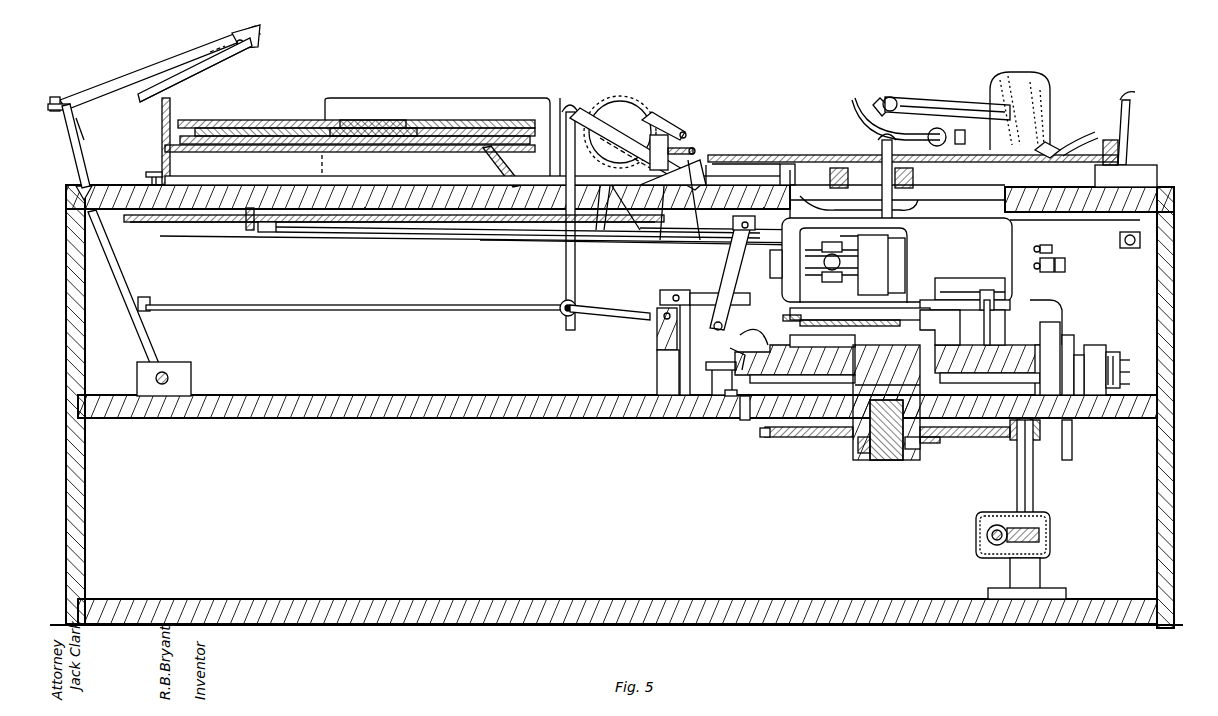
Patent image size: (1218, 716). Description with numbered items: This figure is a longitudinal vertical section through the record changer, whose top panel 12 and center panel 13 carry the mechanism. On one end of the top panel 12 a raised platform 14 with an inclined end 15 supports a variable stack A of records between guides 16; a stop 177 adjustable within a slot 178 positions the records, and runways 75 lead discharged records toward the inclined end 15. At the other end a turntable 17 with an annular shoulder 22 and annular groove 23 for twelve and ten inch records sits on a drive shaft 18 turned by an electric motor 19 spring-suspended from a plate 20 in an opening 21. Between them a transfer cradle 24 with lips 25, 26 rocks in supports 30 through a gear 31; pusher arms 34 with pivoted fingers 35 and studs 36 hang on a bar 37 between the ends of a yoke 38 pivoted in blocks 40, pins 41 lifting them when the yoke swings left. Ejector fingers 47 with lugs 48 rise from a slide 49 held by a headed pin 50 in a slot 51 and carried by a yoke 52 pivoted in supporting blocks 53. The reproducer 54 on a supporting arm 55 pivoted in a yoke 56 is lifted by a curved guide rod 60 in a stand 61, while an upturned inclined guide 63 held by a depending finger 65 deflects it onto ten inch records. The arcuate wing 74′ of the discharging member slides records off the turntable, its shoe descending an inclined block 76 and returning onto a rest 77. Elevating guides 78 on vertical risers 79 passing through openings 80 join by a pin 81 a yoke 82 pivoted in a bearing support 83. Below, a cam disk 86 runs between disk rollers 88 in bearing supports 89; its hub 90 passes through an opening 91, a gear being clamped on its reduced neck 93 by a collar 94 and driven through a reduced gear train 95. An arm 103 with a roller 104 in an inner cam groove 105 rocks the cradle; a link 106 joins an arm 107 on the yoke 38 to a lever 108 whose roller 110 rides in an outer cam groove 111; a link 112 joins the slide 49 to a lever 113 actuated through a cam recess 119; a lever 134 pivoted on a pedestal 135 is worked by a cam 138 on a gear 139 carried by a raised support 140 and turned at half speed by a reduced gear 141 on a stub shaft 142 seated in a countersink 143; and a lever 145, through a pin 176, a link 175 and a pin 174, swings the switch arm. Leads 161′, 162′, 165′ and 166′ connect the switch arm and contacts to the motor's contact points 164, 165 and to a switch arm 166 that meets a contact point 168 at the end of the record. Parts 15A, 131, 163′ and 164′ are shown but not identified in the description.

The top panel 12 is at (312, 222).
The center panel 13 is at (410, 412).
The raised platform 14 is at (368, 150).
The inclined end 15 is at (486, 170).
The bracket 15A is at (1140, 232).
The guides 16 is at (522, 110).
The turntable 17 is at (780, 150).
The drive shaft 18 is at (870, 150).
The electric motor 19 is at (996, 300).
The plate 20 is at (792, 188).
The opening 21 is at (768, 232).
The annular shoulder 22 is at (718, 158).
The annular groove 23 is at (740, 160).
The transfer cradle 24 is at (648, 118).
The lip 25 is at (672, 128).
The lip 26 is at (690, 158).
The supports 30 is at (606, 232).
The gear 31 is at (622, 96).
The pusher arms 34 is at (120, 82).
The pivoted fingers 35 is at (143, 99).
The record engaging studs 36 is at (160, 94).
The bar 37 is at (66, 98).
The yoke 38 is at (128, 265).
The blocks 40 is at (180, 370).
The pins 41 is at (84, 118).
The fingers 47 is at (700, 240).
The lugs 48 is at (642, 186).
The slide 49 is at (392, 230).
The headed pin 50 is at (250, 230).
The slot 51 is at (180, 222).
The yoke 52 is at (650, 230).
The supporting blocks 53 is at (732, 280).
The reproducer 54 is at (1028, 72).
The supporting arm 55 is at (944, 98).
The yoke 56 is at (876, 102).
The curved guide rod 60 is at (856, 96).
The stand 61 is at (950, 124).
The upturned inclined guide 63 is at (1075, 132).
The depending finger 65 is at (1052, 142).
The arcuate wing 74′ is at (1128, 104).
The runways 75 is at (540, 176).
The inclined block 76 is at (662, 240).
The rest 77 is at (1120, 172).
The elevating guides 78 is at (568, 108).
The vertical risers 79 is at (566, 258).
The openings 80 is at (530, 238).
The pin 81 is at (566, 314).
The yoke 82 is at (628, 320).
The bearing support 83 is at (657, 345).
The cam disk 86 is at (732, 352).
The disk rollers 88 is at (712, 368).
The bearing supports 89 is at (700, 396).
The hub 90 is at (842, 440).
The opening 91 is at (806, 438).
The reduced neck 93 is at (895, 458).
The collar 94 is at (862, 455).
The reduced gear train 95 is at (1048, 512).
The arm 103 is at (900, 366).
The roller 104 is at (856, 386).
The inner cam groove 105 is at (802, 334).
The link 106 is at (316, 310).
The arm 107 is at (150, 298).
The lever 108 is at (1062, 316).
The roller 110 is at (980, 341).
The outer cam groove 111 is at (751, 329).
The link 112 is at (444, 238).
The lever 113 is at (790, 286).
The cam recess 119 is at (744, 400).
The plate 131 is at (996, 370).
The lever 134 is at (960, 302).
The pedestal 135 is at (958, 438).
The cam 138 is at (950, 278).
The gear 139 is at (960, 292).
The raised support 140 is at (1060, 330).
The reduced gear 141 is at (890, 262).
The stub shaft 142 is at (870, 332).
The countersink 143 is at (808, 372).
The lever 145 is at (1074, 342).
The lead 161′ is at (1124, 370).
The lead wire 162′ is at (1124, 386).
The contact 163′ is at (1122, 362).
The contact point 164 is at (1045, 238).
The rod 164′ is at (1048, 244).
The contact point 165 is at (1040, 262).
The lead 165′ is at (1060, 270).
The switch arm 166 is at (706, 302).
The lead 166′ is at (1124, 378).
The contact point 168 is at (670, 298).
The pin 174 is at (1068, 420).
The link 175 is at (1062, 420).
The pin 176 is at (1090, 354).
The stop 177 is at (162, 140).
The slot 178 is at (212, 152).
The stack of records A is at (312, 112).